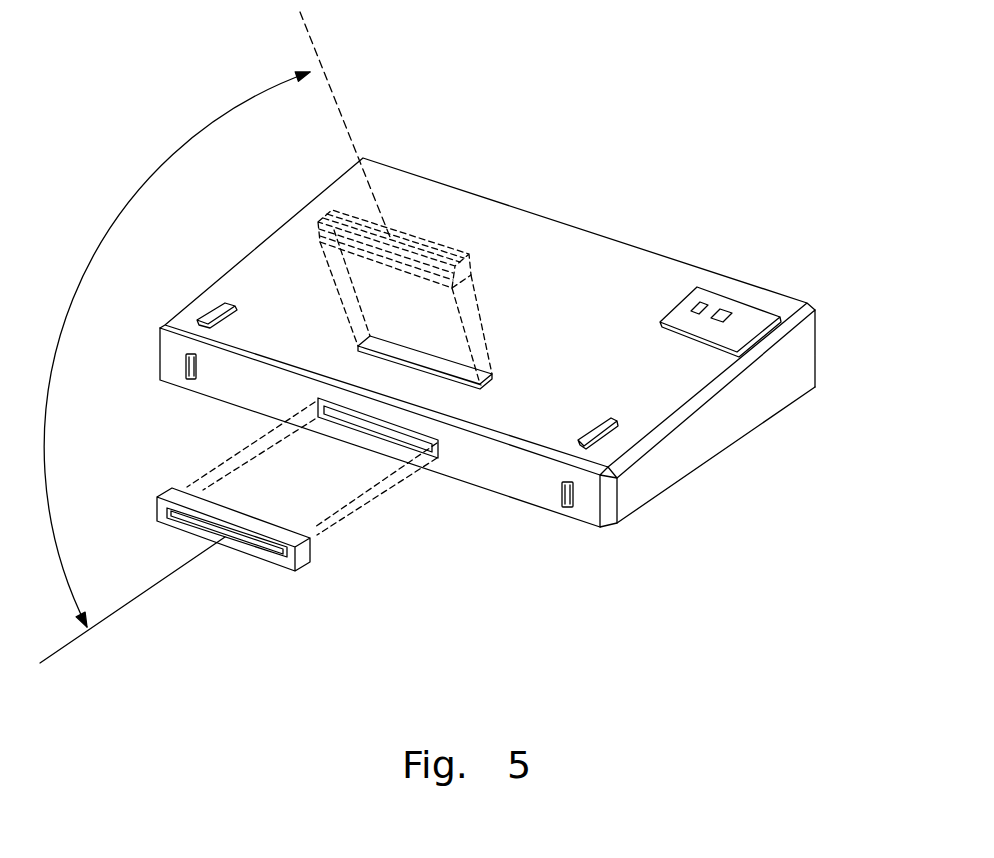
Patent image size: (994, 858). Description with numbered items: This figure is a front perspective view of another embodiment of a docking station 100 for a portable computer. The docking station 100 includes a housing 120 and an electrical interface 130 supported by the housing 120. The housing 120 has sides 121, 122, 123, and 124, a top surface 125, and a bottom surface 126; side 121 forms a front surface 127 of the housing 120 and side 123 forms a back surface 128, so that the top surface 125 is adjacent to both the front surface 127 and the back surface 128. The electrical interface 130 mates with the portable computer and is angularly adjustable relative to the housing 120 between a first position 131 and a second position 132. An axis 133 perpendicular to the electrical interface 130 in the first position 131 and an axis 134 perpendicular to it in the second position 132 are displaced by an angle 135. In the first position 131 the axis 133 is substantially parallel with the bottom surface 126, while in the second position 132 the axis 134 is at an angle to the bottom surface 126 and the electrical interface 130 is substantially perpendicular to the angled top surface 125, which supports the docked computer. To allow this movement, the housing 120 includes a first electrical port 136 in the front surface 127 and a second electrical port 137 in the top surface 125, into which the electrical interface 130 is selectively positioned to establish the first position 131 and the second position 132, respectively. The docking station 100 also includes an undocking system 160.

The docking station 100 is at (657, 92).
The housing 120 is at (672, 252).
The side 121 is at (487, 473).
The side 122 is at (727, 425).
The side 123 is at (820, 335).
The side 124 is at (262, 238).
The top surface 125 is at (487, 222).
The bottom surface 126 is at (695, 475).
The front surface 127 is at (592, 497).
The back surface 128 is at (818, 370).
The electrical interface 130 is at (188, 593).
The first position 131 is at (260, 550).
The second position 132 is at (418, 240).
The axis 133 is at (130, 600).
The axis 134 is at (338, 90).
The angle 135 is at (136, 198).
The first electrical port 136 is at (373, 425).
The second electrical port 137 is at (443, 370).
The undocking system 160 is at (353, 593).